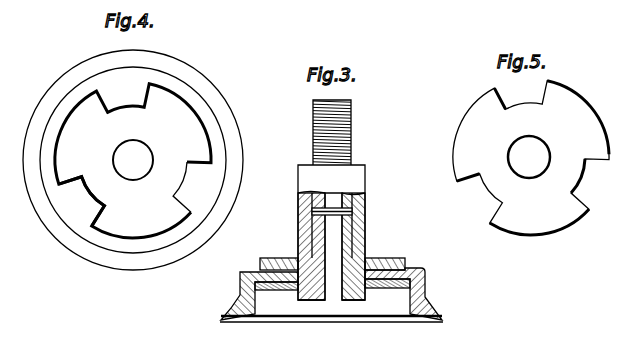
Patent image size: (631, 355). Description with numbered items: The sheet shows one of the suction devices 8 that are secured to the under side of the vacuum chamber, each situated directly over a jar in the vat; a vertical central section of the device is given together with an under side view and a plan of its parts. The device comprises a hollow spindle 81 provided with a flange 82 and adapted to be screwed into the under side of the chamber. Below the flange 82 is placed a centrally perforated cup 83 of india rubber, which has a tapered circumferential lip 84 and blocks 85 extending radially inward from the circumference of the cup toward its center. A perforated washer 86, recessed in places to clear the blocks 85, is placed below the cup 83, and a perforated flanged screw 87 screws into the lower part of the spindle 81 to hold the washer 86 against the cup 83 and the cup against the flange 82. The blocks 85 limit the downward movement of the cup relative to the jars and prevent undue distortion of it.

In FIG. 3, the suction device 8 is at (366, 186).
In FIG. 3, the hollow spindle 81 is at (313, 129).
In FIG. 3, the flange 82 is at (366, 266).
In FIG. 4, the centrally perforated cup 83 is at (155, 158).
In FIG. 3, the centrally perforated cup 83 is at (427, 282).
In FIG. 4, the tapered circumferential lip 84 is at (52, 226).
In FIG. 3, the tapered circumferential lip 84 is at (442, 318).
In FIG. 4, the blocks 85 is at (186, 193).
In FIG. 3, the perforated washer 86 is at (378, 290).
In FIG. 5, the perforated washer 86 is at (531, 158).
In FIG. 3, the perforated flanged screw 87 is at (320, 300).